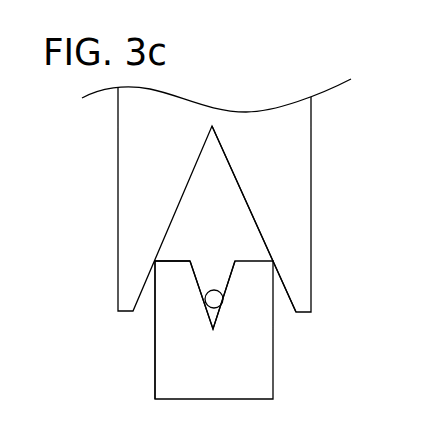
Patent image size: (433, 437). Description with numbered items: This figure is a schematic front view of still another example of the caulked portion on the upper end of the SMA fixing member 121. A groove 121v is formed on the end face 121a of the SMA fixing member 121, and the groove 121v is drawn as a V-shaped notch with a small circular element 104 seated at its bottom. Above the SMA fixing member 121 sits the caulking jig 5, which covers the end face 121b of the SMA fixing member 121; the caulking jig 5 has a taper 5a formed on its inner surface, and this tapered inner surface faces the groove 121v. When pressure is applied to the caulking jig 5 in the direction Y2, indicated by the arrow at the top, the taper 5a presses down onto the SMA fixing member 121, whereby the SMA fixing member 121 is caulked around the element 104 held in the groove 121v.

The caulking jig 5 is at (312, 171).
The taper 5a is at (270, 250).
The SMA fixing member 121 is at (314, 339).
The end face 121a is at (175, 259).
The end face 121b is at (168, 294).
The groove 121v is at (197, 270).
The optical fiber 104 is at (210, 290).
The direction Y2 is at (214, 58).